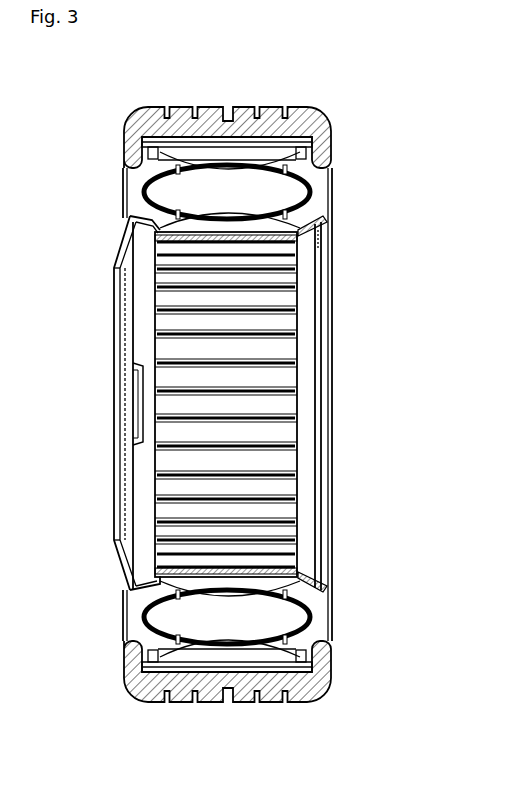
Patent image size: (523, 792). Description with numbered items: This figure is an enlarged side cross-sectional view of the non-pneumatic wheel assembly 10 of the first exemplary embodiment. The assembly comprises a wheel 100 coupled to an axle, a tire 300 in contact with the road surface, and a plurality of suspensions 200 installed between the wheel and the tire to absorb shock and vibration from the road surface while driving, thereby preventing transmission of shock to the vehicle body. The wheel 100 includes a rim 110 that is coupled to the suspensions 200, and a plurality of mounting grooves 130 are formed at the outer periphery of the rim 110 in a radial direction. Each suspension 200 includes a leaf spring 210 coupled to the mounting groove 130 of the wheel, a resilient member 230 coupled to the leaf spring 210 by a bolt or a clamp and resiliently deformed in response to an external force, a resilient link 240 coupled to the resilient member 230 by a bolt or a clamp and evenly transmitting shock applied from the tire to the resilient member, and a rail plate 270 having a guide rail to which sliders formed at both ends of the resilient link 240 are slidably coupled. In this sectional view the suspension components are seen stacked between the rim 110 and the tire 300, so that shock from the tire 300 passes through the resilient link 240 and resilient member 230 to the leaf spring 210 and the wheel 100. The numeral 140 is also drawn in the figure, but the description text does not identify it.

The non-pneumatic wheel assembly 10 is at (242, 774).
The wheel 100 is at (108, 257).
The rim 110 is at (305, 582).
The mounting groove 130 is at (158, 297).
The cell plates 140 is at (266, 385).
The suspension 200 is at (208, 136).
The leaf spring 210 is at (160, 582).
The resilient member 230 is at (310, 620).
The resilient link 240 is at (165, 655).
The rail plate 270 is at (153, 689).
The tire 300 is at (347, 129).